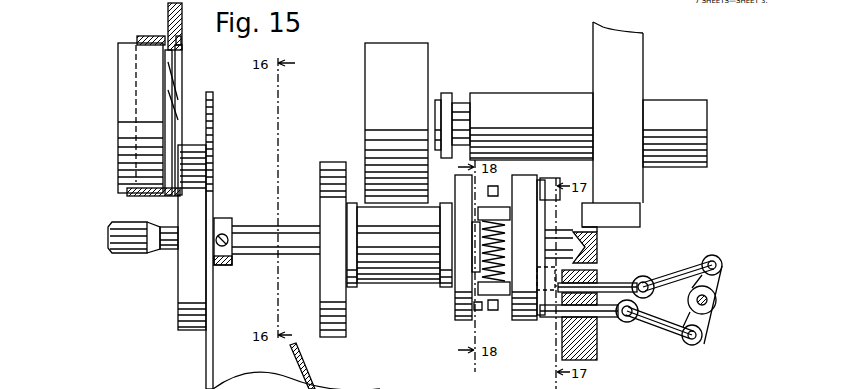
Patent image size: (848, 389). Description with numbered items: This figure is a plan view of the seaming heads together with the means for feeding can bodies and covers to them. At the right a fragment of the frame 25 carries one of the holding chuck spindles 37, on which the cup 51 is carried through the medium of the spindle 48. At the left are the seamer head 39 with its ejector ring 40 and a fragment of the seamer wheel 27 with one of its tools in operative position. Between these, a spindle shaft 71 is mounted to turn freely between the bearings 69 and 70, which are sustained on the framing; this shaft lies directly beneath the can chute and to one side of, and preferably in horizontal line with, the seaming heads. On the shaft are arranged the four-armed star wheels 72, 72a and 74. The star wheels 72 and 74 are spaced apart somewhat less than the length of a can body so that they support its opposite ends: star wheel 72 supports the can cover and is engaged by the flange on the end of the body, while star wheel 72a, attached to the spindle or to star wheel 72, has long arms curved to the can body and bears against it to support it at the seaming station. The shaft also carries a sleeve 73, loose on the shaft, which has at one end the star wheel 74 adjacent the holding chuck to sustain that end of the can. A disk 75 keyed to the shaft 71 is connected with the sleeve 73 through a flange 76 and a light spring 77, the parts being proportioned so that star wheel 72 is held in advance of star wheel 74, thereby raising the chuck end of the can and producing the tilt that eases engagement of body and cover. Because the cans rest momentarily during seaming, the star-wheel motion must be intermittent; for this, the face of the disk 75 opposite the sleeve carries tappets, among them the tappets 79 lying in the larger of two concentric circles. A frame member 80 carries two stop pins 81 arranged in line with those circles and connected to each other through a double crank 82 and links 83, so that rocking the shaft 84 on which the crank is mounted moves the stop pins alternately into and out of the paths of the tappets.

The frame 25 is at (618, 112).
The seamer wheel 27 is at (167, 12).
The holding chuck spindle 37 is at (517, 113).
The seamer head 39 is at (127, 68).
The ejector ring 40 is at (137, 39).
The spindle 48 is at (458, 115).
The cup 51 is at (396, 123).
The bearing 69 is at (148, 224).
The bearing 70 is at (598, 252).
The spindle shaft 71 is at (268, 232).
The star wheel 72 is at (178, 312).
The star wheel 72a is at (206, 363).
The sleeve 73 is at (413, 262).
The star wheel 74 is at (346, 325).
The disk 75 is at (523, 322).
The flange 76 is at (462, 300).
The spring 77 is at (502, 228).
The tappet 79 is at (558, 199).
The frame member 80 is at (595, 355).
The stop pin 81 is at (620, 285).
The double crank 82 is at (722, 263).
The link 83 is at (680, 270).
The shaft 84 is at (707, 306).